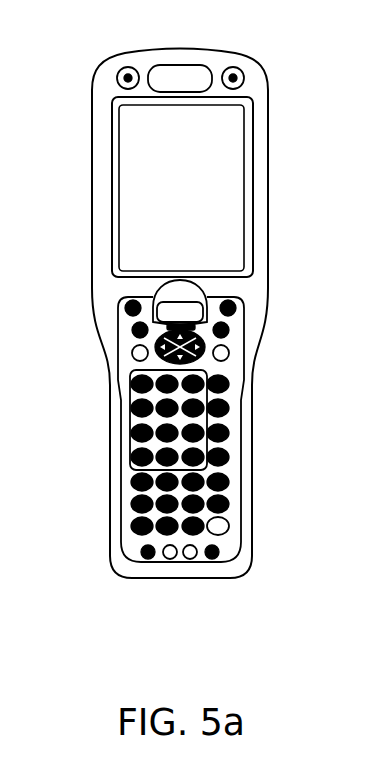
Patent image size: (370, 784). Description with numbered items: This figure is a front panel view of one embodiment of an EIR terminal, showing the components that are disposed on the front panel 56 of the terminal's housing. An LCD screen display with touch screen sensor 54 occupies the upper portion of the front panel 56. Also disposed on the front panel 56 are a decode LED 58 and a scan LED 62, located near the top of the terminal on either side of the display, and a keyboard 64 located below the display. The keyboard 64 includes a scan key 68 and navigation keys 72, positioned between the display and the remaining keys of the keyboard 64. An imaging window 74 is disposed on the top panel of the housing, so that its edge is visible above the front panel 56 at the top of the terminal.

The LCD screen display with touch screen sensor 54 is at (128, 188).
The front panel 56 is at (92, 124).
The decode LED 58 is at (117, 76).
The scan LED 62 is at (244, 76).
The keyboard 64 is at (137, 423).
The scan key 68 is at (163, 303).
The navigation keys 72 is at (148, 343).
The imaging window 74 is at (173, 48).